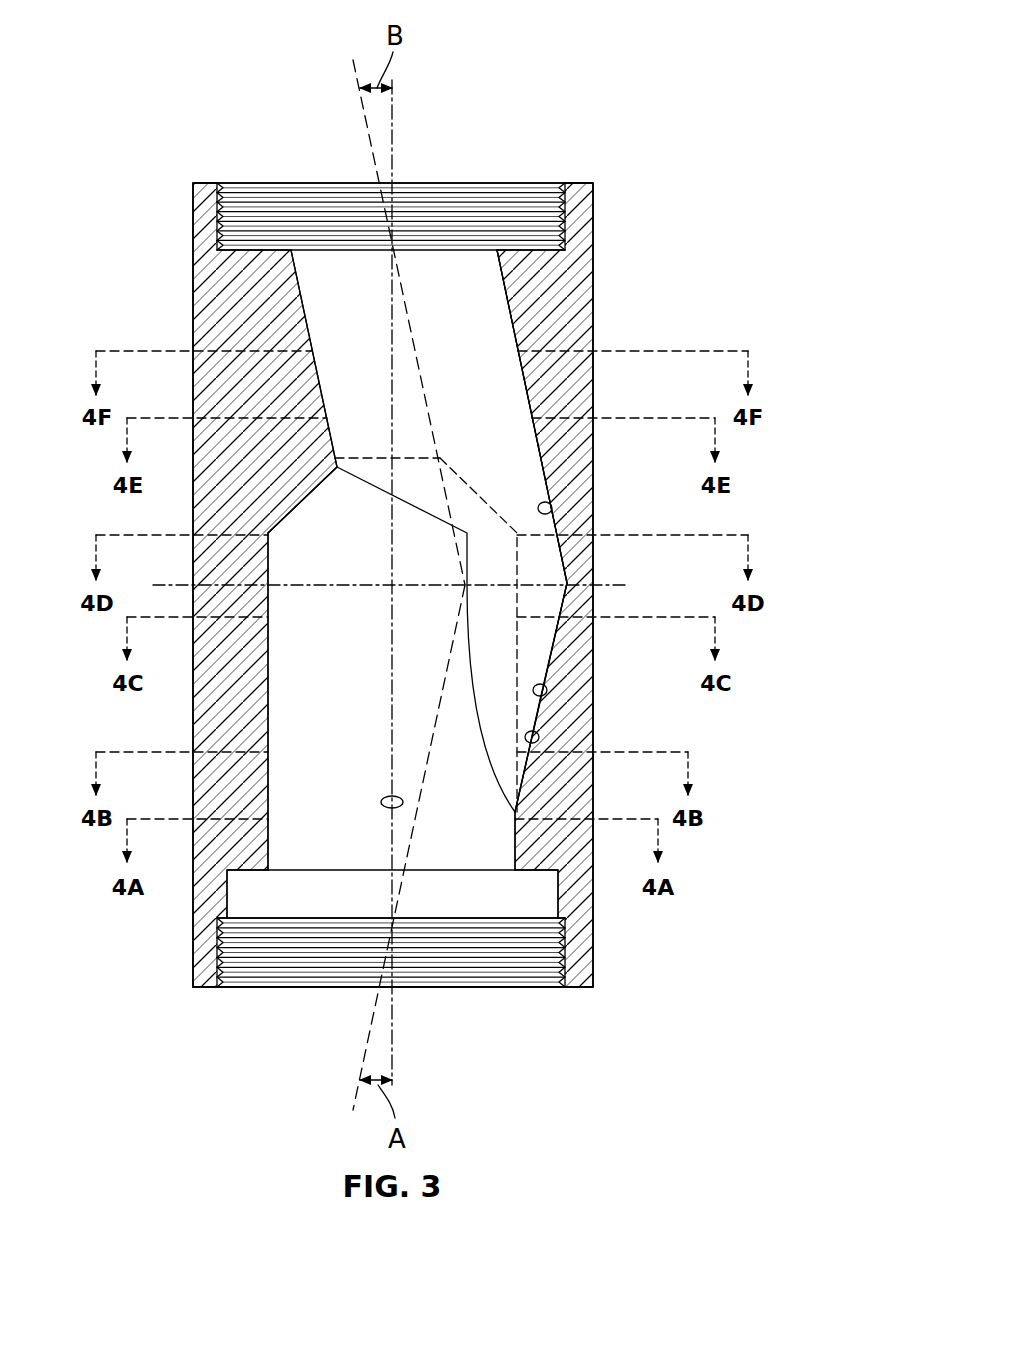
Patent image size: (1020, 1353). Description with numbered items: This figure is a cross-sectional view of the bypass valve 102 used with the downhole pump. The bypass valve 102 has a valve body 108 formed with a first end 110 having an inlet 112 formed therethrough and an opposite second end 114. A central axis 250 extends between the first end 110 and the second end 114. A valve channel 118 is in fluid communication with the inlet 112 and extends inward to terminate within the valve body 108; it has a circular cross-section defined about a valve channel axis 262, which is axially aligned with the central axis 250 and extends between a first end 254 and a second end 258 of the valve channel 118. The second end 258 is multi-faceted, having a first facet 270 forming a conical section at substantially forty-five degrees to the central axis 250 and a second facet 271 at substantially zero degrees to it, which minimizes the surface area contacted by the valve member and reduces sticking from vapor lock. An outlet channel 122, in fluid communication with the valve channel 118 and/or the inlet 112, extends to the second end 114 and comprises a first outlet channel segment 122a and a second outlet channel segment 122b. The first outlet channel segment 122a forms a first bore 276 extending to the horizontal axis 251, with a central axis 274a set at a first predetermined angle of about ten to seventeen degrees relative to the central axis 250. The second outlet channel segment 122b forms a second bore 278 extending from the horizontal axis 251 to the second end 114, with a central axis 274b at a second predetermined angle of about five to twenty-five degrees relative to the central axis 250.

The bypass valve 102 is at (703, 190).
The valve body 108 is at (593, 305).
The first end 110 is at (578, 987).
The inlet 112 is at (230, 977).
The second end 114 is at (580, 183).
The valve channel 118 is at (268, 703).
The outlet channel 122 is at (513, 335).
The first outlet channel segment 122a is at (548, 693).
The second outlet channel segment 122b is at (553, 512).
The central axis 250 is at (392, 1015).
The horizontal axis 251 is at (295, 588).
The first end of valve channel 254 is at (240, 872).
The second end of valve channel 258 is at (440, 458).
The valve channel axis 262 is at (383, 806).
The first facet 270 is at (303, 502).
The second facet 271 is at (375, 457).
The central axis of first bore 274a is at (365, 1052).
The central axis of second bore 274b is at (365, 118).
The first bore 276 is at (540, 740).
The second bore 278 is at (502, 293).